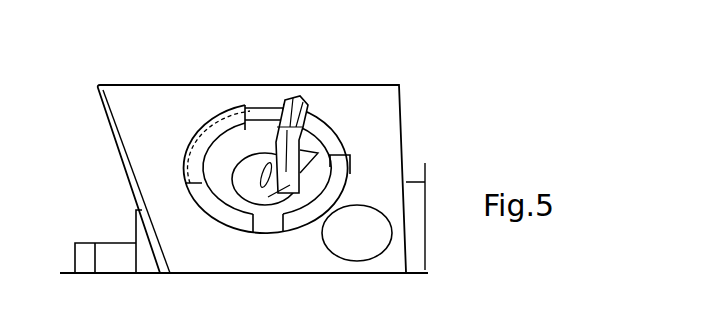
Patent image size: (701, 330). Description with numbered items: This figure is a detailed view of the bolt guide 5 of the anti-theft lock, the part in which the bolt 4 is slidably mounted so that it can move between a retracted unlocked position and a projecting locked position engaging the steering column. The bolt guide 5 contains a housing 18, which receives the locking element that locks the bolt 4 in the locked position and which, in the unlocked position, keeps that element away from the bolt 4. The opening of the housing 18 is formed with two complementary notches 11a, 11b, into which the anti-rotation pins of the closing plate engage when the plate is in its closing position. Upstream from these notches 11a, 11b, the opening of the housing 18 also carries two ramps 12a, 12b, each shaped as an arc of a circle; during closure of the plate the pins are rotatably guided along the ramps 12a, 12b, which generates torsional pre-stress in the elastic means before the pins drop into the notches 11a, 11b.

The bolt guide 5 is at (143, 100).
The bolt 4 is at (110, 250).
The ramp 12a is at (217, 122).
The ramp 12b is at (340, 158).
The notch 11a is at (265, 110).
The notch 11b is at (258, 231).
The housing 18 is at (298, 105).